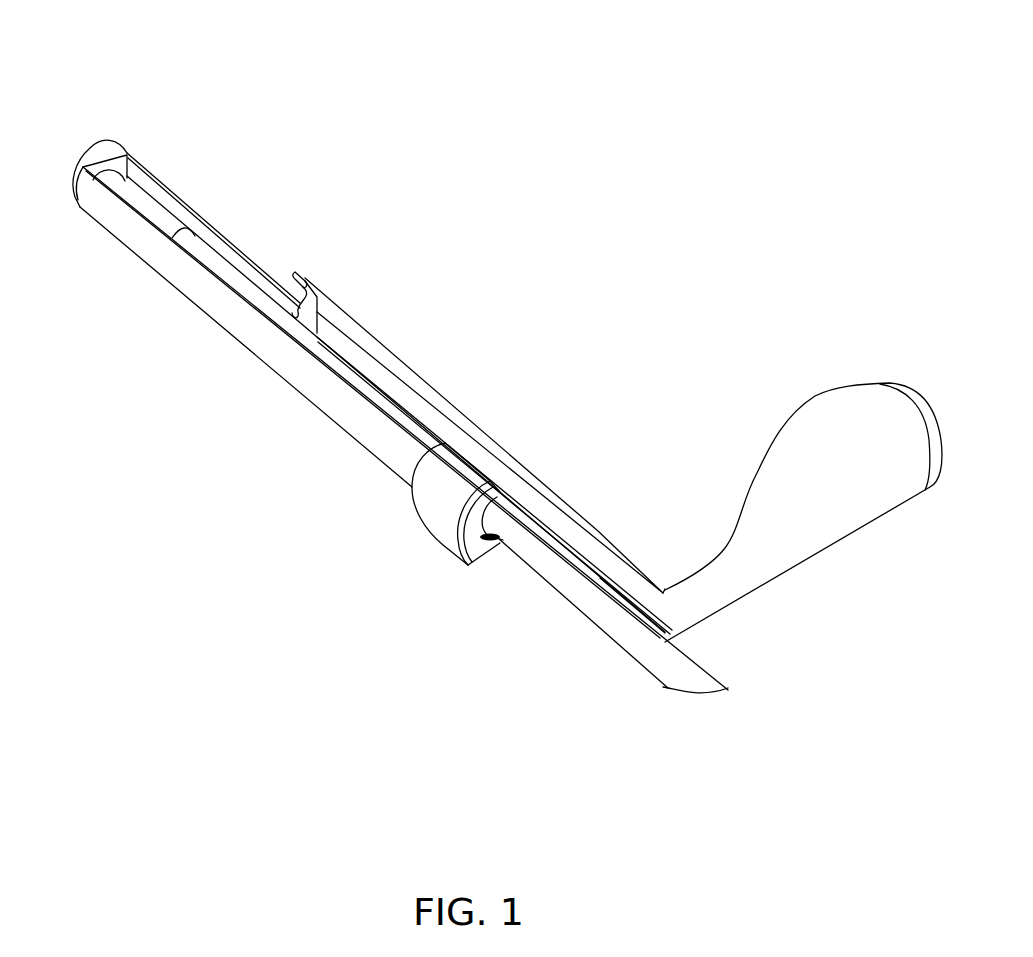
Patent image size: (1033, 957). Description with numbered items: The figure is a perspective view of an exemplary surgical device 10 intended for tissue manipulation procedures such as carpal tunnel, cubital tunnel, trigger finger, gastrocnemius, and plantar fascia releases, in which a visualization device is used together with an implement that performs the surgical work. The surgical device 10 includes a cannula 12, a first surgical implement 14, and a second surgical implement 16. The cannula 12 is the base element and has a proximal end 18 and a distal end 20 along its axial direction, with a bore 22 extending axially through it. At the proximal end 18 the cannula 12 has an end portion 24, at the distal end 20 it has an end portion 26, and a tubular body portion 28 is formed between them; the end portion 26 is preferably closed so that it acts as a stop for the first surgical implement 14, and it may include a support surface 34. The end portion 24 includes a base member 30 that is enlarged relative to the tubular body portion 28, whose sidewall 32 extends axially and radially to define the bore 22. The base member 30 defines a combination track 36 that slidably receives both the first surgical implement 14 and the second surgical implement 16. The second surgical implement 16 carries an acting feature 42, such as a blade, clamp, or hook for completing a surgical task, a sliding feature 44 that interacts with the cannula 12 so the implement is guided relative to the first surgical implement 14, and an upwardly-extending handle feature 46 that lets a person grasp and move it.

The surgical device 10 is at (496, 240).
The cannula 12 is at (357, 450).
The first surgical implement 14 is at (688, 678).
The second surgical implement 16 is at (533, 482).
The proximal end 18 is at (770, 692).
The distal end 20 is at (84, 114).
The bore 22 is at (167, 222).
The end portion 24 is at (422, 531).
The end portion 26 is at (124, 139).
The tubular body portion 28 is at (405, 428).
The base member 30 is at (440, 548).
The sidewall 32 is at (245, 332).
The support surface 34 is at (107, 146).
The combination track 36 is at (498, 546).
The acting feature 42 is at (300, 274).
The sliding feature 44 is at (641, 620).
The handle feature 46 is at (853, 422).